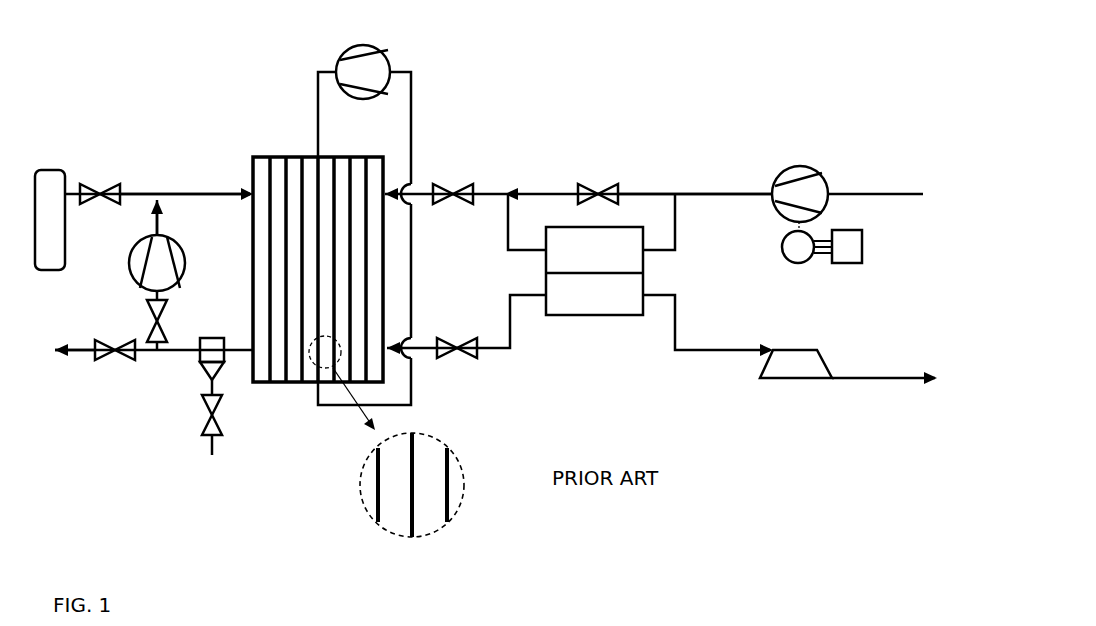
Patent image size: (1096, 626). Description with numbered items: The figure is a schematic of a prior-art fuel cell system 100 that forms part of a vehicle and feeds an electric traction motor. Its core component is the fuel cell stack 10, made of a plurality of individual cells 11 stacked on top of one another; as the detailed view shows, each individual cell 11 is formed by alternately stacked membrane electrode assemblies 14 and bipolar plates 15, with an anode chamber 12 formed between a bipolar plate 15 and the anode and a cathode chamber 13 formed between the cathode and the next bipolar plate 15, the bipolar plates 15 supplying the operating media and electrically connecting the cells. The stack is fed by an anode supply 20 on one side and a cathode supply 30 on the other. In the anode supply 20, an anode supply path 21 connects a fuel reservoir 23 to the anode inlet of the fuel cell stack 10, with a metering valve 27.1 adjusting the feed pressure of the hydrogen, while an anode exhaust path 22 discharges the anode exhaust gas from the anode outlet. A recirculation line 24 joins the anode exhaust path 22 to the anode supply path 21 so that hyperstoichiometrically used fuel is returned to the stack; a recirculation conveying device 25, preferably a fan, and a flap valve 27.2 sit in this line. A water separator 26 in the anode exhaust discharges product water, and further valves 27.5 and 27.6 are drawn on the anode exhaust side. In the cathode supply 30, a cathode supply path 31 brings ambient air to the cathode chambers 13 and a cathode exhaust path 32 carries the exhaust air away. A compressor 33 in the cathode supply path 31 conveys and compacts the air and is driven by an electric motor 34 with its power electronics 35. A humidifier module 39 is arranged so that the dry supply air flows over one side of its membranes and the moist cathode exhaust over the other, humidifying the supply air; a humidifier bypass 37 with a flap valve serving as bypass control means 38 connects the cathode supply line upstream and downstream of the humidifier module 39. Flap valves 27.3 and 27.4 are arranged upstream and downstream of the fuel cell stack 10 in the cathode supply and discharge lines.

The fuel cell system 100 is at (563, 65).
The anode supply 20 is at (193, 138).
The fuel cell stack 10 is at (299, 143).
The individual cell 11 is at (293, 172).
The anode chamber 12 is at (393, 463).
The cathode chamber 13 is at (428, 510).
The membrane electrode assembly 14 is at (413, 525).
The bipolar plate 15 is at (445, 478).
The anode supply path 21 is at (167, 190).
The anode exhaust path 22 is at (75, 352).
The fuel reservoir 23 is at (50, 180).
The recirculation line 24 is at (152, 222).
The recirculation conveying device 25 is at (177, 272).
The water separator 26 is at (200, 358).
The metering valve 27.1 is at (101, 190).
The flap valve 27.2 is at (147, 322).
The flap valve 27.3 is at (457, 210).
The flap valve 27.4 is at (453, 333).
The valve 27.5 is at (105, 362).
The valve 27.6 is at (222, 408).
The cathode supply 30 is at (508, 170).
The cathode supply path 31 is at (868, 190).
The cathode exhaust path 32 is at (848, 377).
The compressor 33 is at (793, 172).
The electric motor 34 is at (793, 248).
The power electronics 35 is at (863, 245).
The humidifier bypass 37 is at (643, 191).
The bypass control means 38 is at (590, 184).
The humidifier module 39 is at (603, 300).